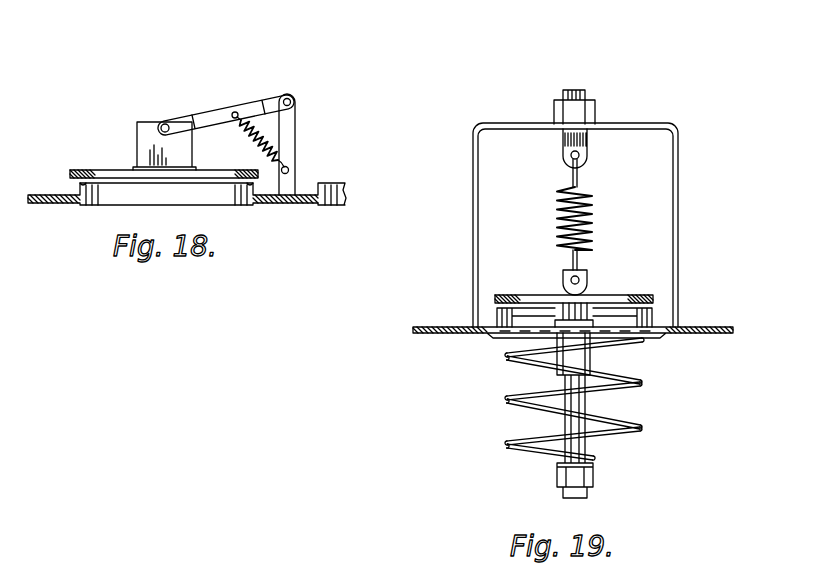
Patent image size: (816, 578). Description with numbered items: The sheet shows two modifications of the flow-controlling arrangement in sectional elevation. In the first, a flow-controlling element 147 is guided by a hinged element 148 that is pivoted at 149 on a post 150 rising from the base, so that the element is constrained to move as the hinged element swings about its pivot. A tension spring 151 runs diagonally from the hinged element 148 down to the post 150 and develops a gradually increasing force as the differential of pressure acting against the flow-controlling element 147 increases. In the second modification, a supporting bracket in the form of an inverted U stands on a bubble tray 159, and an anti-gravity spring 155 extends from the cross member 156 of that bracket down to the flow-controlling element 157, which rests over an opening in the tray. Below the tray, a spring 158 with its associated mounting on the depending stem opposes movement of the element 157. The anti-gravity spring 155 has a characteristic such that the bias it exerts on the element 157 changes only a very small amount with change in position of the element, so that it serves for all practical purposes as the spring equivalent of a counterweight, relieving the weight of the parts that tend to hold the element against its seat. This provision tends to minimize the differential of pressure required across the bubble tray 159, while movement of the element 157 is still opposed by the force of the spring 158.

In FIG. 18, the flow-controlling element 147 is at (96, 171).
In FIG. 18, the hinged element 148 is at (248, 103).
In FIG. 18, the pivot 149 is at (296, 100).
In FIG. 18, the post 150 is at (296, 141).
In FIG. 18, the tension spring 151 is at (262, 142).
In FIG. 19, the anti-gravity spring 155 is at (588, 228).
In FIG. 19, the cross member 156 is at (670, 100).
In FIG. 19, the flow-controlling element 157 is at (641, 296).
In FIG. 19, the spring 158 is at (507, 399).
In FIG. 19, the bubble tray 159 is at (447, 326).